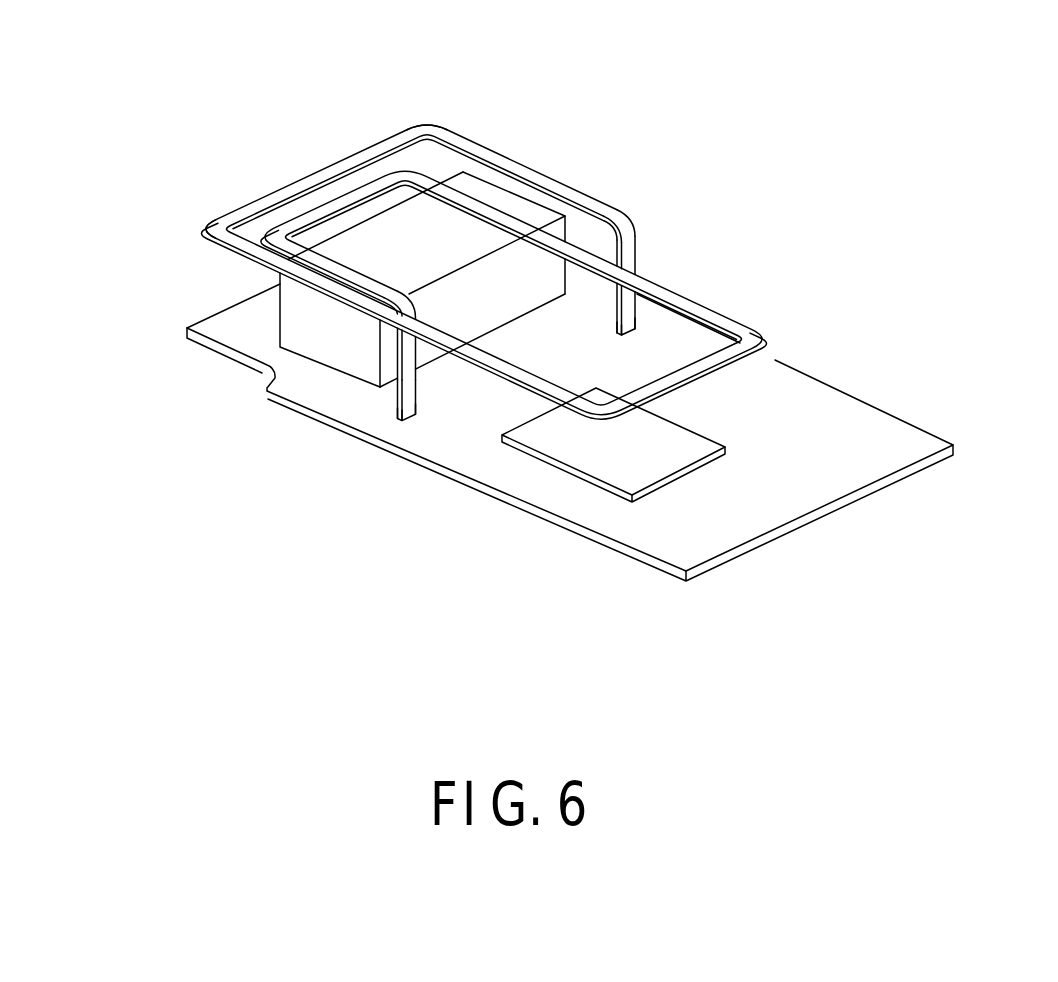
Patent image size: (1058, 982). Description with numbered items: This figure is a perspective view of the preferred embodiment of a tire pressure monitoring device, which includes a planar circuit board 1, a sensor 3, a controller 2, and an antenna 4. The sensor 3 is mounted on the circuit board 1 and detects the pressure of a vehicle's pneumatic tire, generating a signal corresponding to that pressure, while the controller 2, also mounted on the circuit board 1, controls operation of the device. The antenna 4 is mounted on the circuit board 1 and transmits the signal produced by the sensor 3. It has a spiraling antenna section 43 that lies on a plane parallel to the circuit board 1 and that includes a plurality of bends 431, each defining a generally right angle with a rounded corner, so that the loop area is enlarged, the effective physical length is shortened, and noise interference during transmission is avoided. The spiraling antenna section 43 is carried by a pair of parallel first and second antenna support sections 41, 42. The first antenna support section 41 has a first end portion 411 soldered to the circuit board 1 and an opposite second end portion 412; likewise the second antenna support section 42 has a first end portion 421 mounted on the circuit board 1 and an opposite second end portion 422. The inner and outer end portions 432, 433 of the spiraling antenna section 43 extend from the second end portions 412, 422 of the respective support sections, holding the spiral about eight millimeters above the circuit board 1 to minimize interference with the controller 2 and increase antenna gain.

The circuit board 1 is at (884, 398).
The controller 2 is at (547, 441).
The sensor 3 is at (282, 337).
The antenna 4 is at (431, 279).
The first antenna support section 41 is at (370, 442).
The first end portion 411 is at (406, 417).
The second end portion 412 is at (395, 356).
The second antenna support section 42 is at (713, 262).
The first end portion 421 is at (637, 338).
The second end portion 422 is at (630, 248).
The spiraling antenna section 43 is at (409, 211).
The bends 431 is at (427, 118).
The inner end portion 432 is at (360, 285).
The outer end portion 433 is at (601, 209).